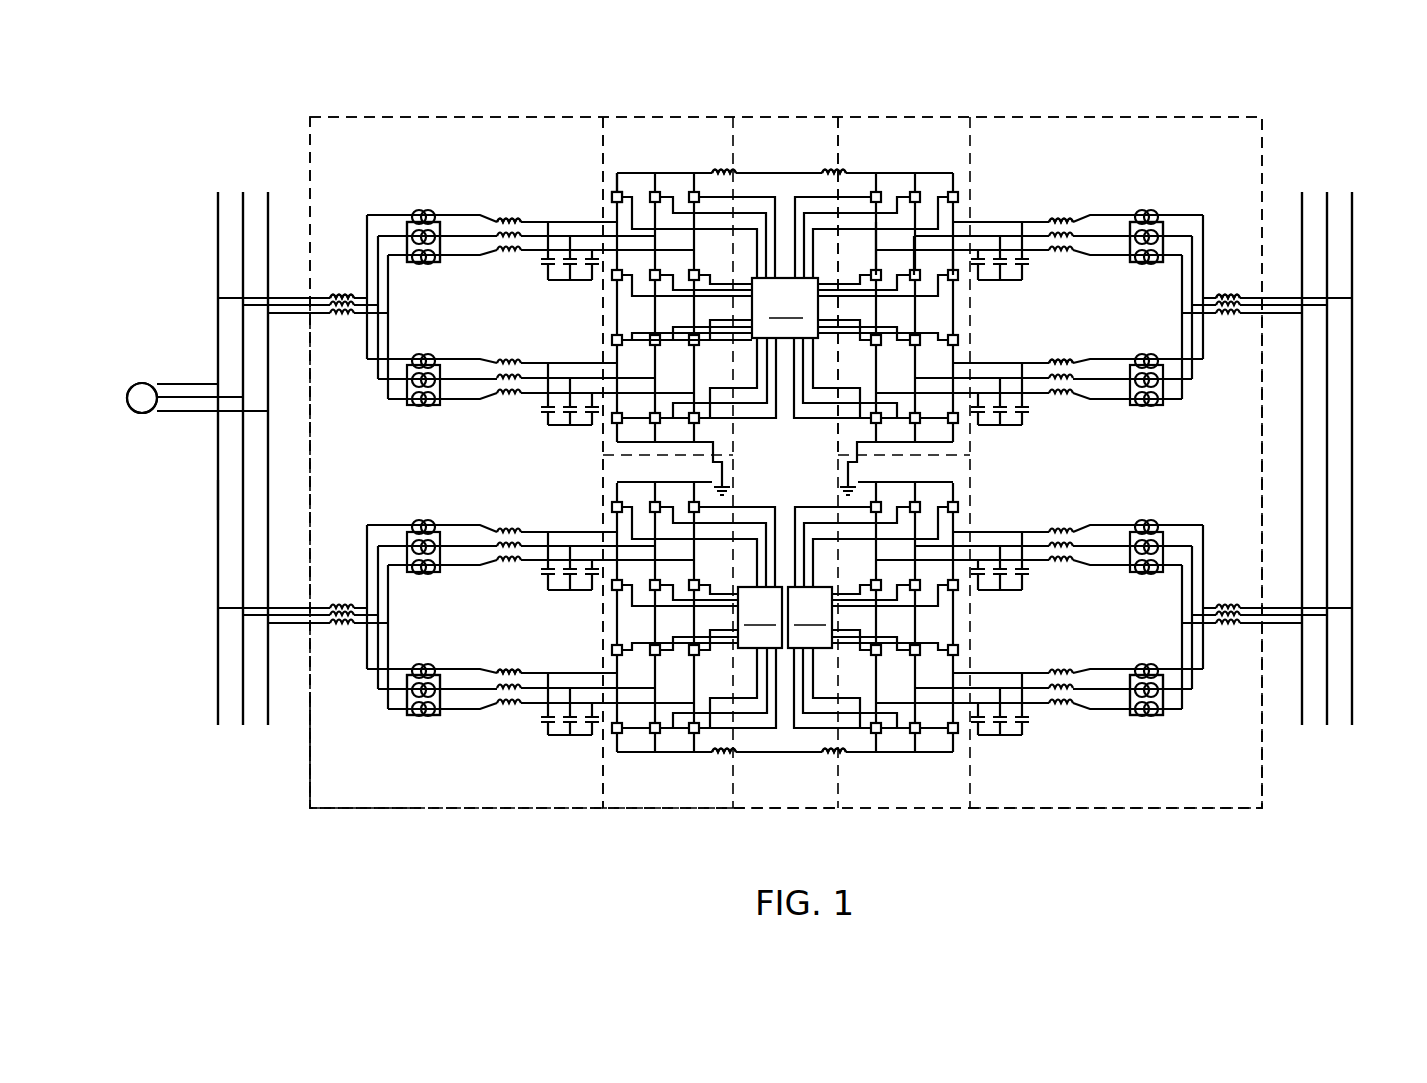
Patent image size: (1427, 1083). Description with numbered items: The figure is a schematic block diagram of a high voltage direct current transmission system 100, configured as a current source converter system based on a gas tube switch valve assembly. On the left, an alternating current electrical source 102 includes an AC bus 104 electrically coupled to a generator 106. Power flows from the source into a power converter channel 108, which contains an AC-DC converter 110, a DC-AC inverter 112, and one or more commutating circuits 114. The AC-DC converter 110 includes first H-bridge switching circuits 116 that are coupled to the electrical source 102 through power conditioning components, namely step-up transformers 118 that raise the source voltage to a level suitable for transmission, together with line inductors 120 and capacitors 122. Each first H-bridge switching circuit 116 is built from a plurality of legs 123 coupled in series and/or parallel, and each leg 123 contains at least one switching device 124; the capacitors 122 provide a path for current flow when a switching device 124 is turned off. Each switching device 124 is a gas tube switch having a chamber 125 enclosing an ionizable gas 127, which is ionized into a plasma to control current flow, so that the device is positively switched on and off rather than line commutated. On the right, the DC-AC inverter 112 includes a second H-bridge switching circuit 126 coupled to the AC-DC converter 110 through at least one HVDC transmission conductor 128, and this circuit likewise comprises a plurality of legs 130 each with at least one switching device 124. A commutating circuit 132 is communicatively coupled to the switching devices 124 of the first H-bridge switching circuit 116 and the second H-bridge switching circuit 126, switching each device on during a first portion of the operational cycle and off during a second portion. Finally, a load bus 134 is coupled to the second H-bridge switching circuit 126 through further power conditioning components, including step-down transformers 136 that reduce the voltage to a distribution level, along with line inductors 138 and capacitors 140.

The HVDC transmission system 100 is at (827, 104).
The AC electrical source 102 is at (257, 170).
The AC bus 104 is at (218, 500).
The generator 106 is at (143, 381).
The power converter channel 108 is at (371, 810).
The AC-DC converter 110 is at (498, 783).
The DC-AC inverter 112 is at (1148, 793).
The commutating circuit 114 is at (801, 792).
The first H-bridge switching circuit 116 is at (666, 147).
The step-up transformer 118 is at (425, 356).
The line inductor 120 is at (345, 278).
The capacitor 122 is at (580, 294).
The leg 123 is at (622, 173).
The switching device 124 is at (642, 347).
The chamber 125 is at (614, 194).
The second H-bridge switching circuit 126 is at (924, 154).
The ionizable gas 127 is at (610, 198).
The HVDC transmission conductor 128 is at (759, 173).
The leg 130 is at (948, 256).
The commutating circuit 132 is at (785, 463).
The load bus 134 is at (1356, 522).
The step-down transformer 136 is at (1152, 361).
The line inductor 138 is at (1074, 269).
The capacitor 140 is at (990, 296).